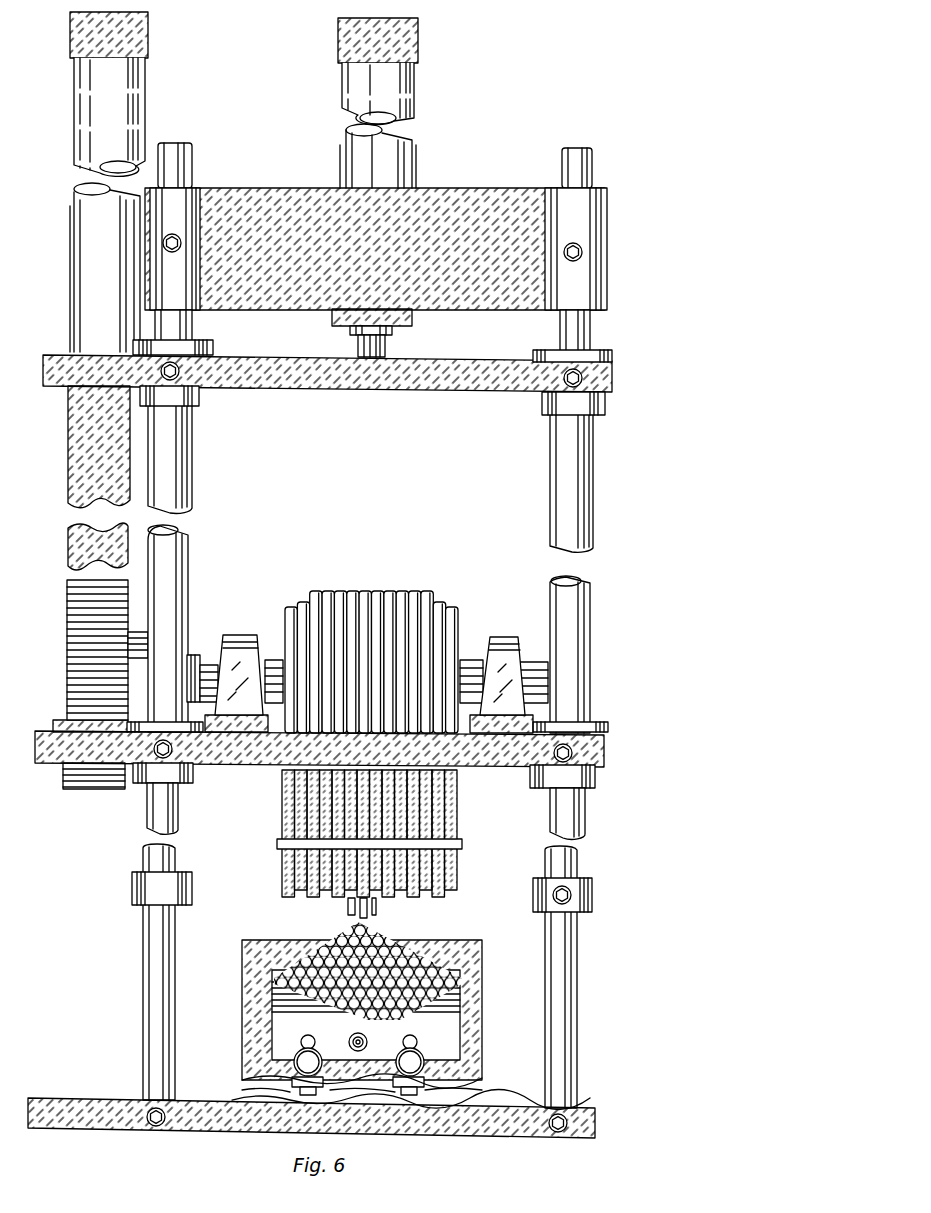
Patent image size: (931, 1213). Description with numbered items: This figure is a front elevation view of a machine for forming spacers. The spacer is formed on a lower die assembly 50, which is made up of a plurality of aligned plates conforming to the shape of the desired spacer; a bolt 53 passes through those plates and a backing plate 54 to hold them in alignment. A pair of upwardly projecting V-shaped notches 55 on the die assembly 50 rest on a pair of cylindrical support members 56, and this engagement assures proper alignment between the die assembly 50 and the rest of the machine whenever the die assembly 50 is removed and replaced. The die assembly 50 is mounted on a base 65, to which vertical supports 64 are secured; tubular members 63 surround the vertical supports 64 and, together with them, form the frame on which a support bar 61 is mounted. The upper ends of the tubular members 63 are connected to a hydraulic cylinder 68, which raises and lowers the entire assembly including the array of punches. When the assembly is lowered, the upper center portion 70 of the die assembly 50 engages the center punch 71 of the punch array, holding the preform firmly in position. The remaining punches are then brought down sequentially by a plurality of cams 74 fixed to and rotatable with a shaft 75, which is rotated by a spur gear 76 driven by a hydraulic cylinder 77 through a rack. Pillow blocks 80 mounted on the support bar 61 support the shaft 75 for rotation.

The lower die assembly 50 is at (411, 997).
The bolt 53 is at (366, 1041).
The backing plate 54 is at (485, 964).
The V-shaped notches 55 is at (416, 1048).
The cylindrical support members 56 is at (460, 1070).
The support bar 61 is at (46, 763).
The tubular members 63 is at (192, 454).
The vertical supports 64 is at (422, 393).
The base 65 is at (68, 1098).
The hydraulic cylinder 68 is at (414, 154).
The upper center portion 70 is at (344, 935).
The center punch 71 is at (367, 918).
The cams 74 is at (388, 592).
The shaft 75 is at (190, 660).
The spur gear 76 is at (67, 612).
The hydraulic cylinder 77 is at (72, 238).
The pillow blocks 80 is at (246, 634).